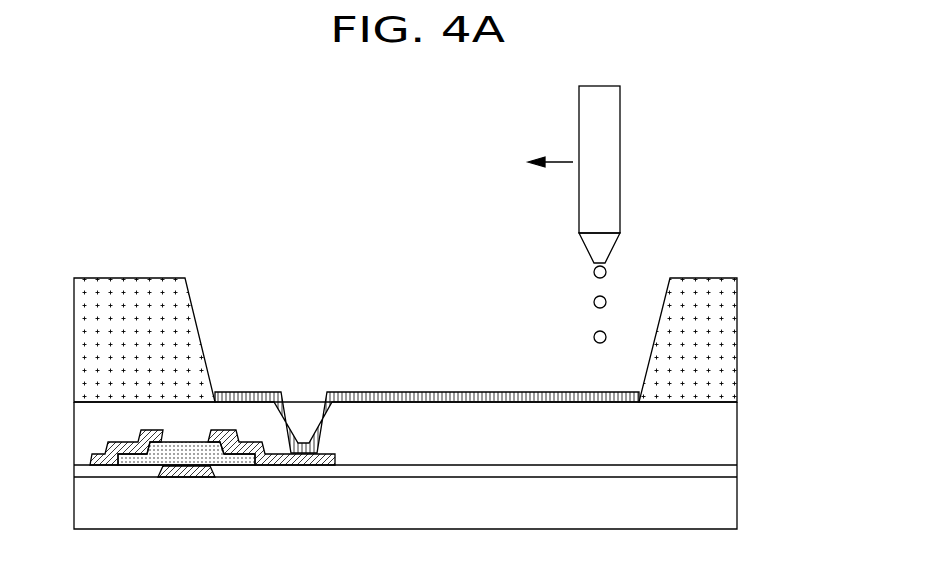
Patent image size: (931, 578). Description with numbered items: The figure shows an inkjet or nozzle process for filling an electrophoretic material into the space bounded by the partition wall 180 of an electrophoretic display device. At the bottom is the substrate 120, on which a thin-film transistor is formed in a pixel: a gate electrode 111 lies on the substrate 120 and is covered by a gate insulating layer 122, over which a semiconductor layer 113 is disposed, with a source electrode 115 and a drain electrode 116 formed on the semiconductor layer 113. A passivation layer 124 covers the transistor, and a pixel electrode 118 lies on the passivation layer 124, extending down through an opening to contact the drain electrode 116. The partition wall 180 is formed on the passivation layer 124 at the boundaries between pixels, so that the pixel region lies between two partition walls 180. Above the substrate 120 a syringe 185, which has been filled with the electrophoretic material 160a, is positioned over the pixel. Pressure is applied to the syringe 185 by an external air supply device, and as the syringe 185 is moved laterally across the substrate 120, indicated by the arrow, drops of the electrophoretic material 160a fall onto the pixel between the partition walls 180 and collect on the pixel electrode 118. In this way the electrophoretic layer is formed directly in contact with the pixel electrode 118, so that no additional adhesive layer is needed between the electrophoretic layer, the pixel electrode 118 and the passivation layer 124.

The gate electrode 111 is at (185, 473).
The semiconductor layer 113 is at (140, 458).
The source electrode 115 is at (103, 459).
The drain electrode 116 is at (287, 458).
The pixel electrode 118 is at (425, 396).
The substrate 120 is at (720, 512).
The gate insulating layer 122 is at (720, 469).
The passivation layer 124 is at (720, 434).
The electrophoretic material 160a is at (606, 297).
The partition wall 180 is at (720, 342).
The syringe 185 is at (618, 160).